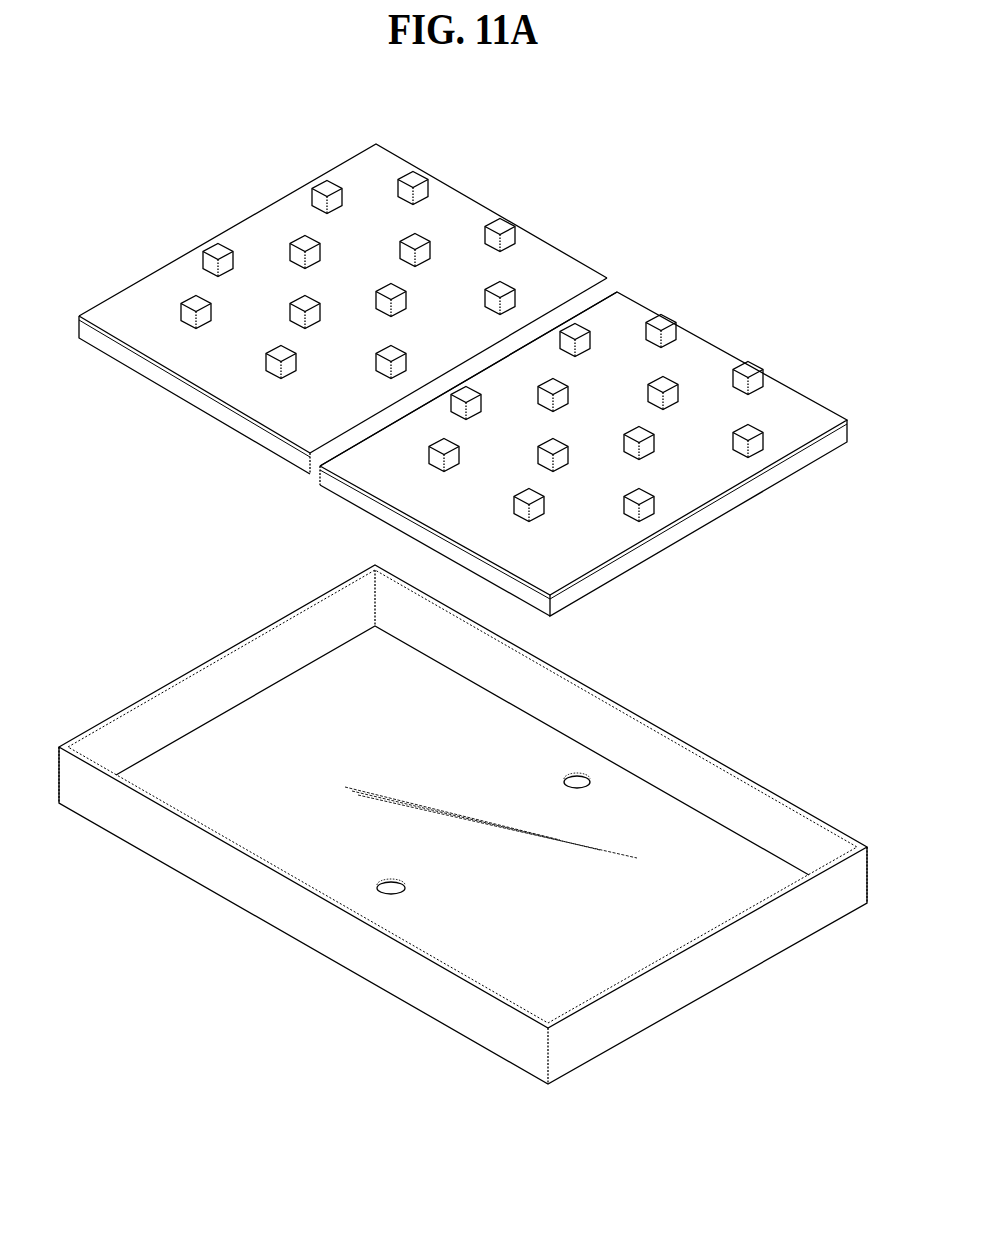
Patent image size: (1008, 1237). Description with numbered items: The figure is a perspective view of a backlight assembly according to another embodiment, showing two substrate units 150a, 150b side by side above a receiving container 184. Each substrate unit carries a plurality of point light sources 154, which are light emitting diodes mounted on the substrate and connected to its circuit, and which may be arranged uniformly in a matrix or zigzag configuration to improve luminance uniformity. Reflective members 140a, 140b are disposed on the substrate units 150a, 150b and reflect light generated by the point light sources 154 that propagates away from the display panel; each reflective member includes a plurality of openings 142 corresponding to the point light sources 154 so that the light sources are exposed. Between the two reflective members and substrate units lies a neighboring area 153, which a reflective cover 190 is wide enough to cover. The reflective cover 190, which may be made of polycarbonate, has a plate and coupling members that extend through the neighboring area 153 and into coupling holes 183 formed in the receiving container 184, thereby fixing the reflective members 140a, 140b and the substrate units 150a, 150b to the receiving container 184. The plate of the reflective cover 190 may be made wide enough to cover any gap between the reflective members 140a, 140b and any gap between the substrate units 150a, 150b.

The reflective member 140a is at (160, 290).
The reflective member 140b is at (612, 538).
The opening 142 is at (428, 181).
The point light source 154 is at (348, 241).
The substrate unit 150a is at (200, 402).
The substrate unit 150b is at (382, 508).
The neighboring area 153 is at (309, 481).
The reflective cover 190 is at (598, 292).
The coupling hole 183 is at (580, 777).
The receiving container 184 is at (463, 824).